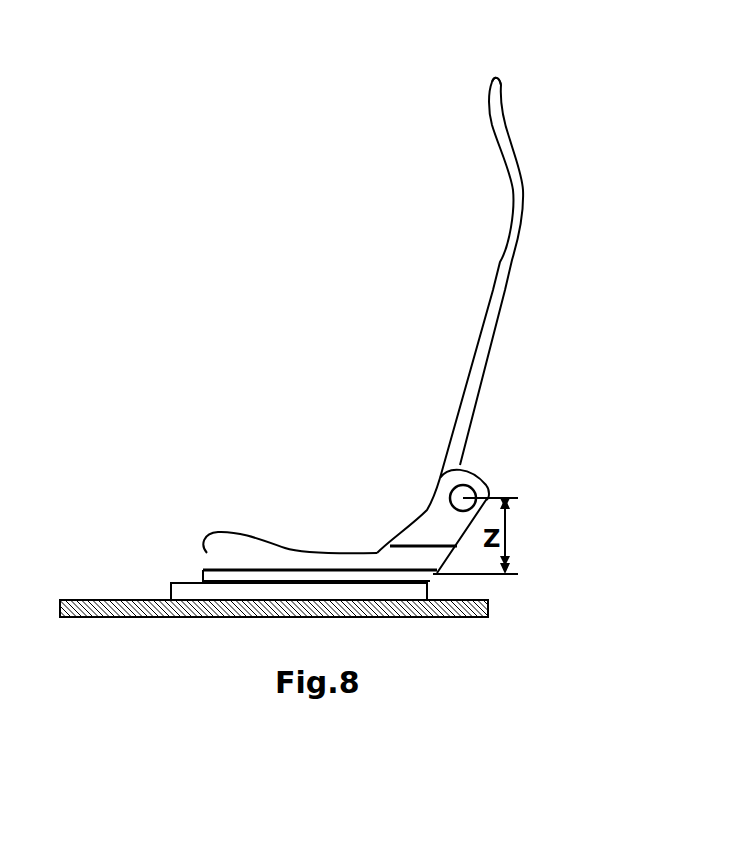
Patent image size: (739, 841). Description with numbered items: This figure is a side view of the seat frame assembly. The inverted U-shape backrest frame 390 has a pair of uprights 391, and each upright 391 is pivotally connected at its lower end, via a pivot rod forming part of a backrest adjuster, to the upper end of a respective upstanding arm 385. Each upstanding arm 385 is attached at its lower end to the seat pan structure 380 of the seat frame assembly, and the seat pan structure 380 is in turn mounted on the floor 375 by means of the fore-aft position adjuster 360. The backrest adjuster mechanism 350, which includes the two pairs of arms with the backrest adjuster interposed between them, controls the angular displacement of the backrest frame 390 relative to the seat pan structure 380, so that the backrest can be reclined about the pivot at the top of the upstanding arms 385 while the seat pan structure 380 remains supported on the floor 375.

The backrest adjuster mechanism 350 is at (480, 490).
The fore-aft position adjuster 360 is at (200, 573).
The floor 375 is at (488, 600).
The seat pan structure 380 is at (310, 553).
The upstanding arms 385 is at (427, 510).
The backrest frame 390 is at (478, 190).
The uprights 391 is at (500, 148).